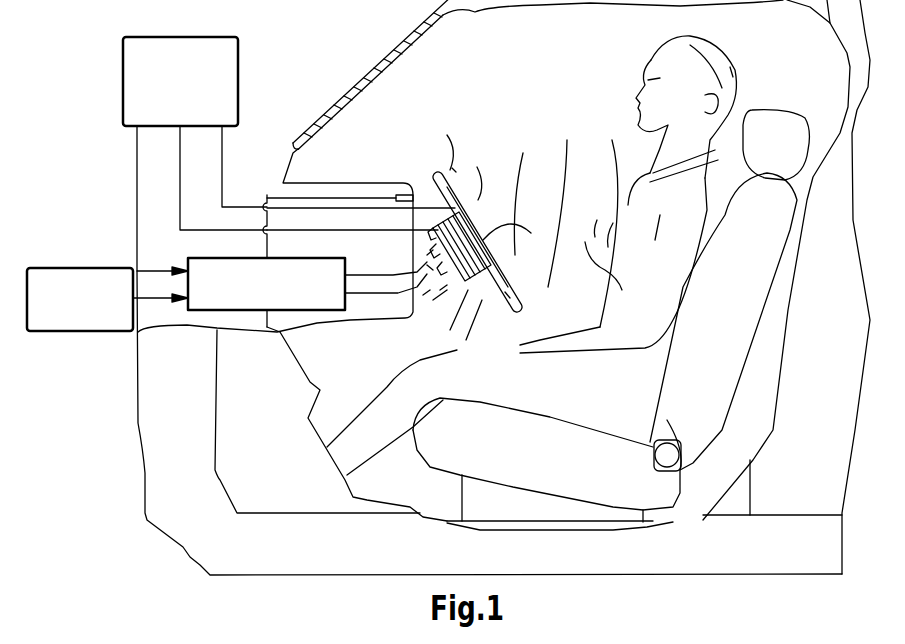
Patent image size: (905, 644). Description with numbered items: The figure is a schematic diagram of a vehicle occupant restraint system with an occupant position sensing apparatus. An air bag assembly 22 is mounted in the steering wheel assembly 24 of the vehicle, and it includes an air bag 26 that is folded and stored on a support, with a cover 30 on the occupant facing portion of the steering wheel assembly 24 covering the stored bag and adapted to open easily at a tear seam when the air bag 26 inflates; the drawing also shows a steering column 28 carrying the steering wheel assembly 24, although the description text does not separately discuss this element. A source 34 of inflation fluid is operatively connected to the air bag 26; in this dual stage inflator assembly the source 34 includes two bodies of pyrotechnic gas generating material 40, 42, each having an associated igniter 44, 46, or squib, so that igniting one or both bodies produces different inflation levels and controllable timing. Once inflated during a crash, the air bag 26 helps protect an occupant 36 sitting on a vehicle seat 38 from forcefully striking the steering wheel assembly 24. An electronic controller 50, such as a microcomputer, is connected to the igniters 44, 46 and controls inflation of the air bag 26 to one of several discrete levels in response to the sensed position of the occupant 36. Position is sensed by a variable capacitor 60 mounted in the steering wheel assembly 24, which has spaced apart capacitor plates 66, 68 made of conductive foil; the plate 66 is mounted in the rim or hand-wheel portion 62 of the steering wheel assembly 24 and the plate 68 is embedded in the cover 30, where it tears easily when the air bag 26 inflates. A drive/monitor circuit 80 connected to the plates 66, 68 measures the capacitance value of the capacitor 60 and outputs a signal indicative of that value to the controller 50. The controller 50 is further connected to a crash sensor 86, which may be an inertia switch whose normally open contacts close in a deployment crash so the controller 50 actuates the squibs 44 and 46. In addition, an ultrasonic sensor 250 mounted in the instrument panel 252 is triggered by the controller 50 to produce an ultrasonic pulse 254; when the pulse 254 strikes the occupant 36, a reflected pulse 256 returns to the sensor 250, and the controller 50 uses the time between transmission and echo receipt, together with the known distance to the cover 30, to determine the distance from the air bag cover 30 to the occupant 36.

The air bag assembly 22 is at (462, 322).
The steering wheel assembly 24 is at (475, 185).
The air bag 26 is at (475, 292).
The steering column 28 is at (473, 330).
The cover 30 is at (490, 243).
The source of inflation fluid 34 is at (447, 300).
The occupant 36 is at (625, 400).
The vehicle seat 38 is at (513, 457).
The body of pyrotechnic gas generating material 40 is at (427, 255).
The body of pyrotechnic gas generating material 42 is at (436, 305).
The igniter 44 is at (427, 265).
The igniter 46 is at (425, 294).
The electronic controller 50 is at (280, 332).
The variable capacitor 60 is at (502, 192).
The rim or hand-wheel portion 62 is at (507, 290).
The capacitor plate 66 is at (452, 166).
The capacitor plate 68 is at (521, 238).
The drive/monitor circuit 80 is at (142, 30).
The crash sensor 86 is at (81, 266).
The ultrasonic sensor 250 is at (412, 192).
The instrument panel 252 is at (384, 182).
The ultrasonic pulse 254 is at (523, 158).
The reflected pulse 256 is at (621, 277).